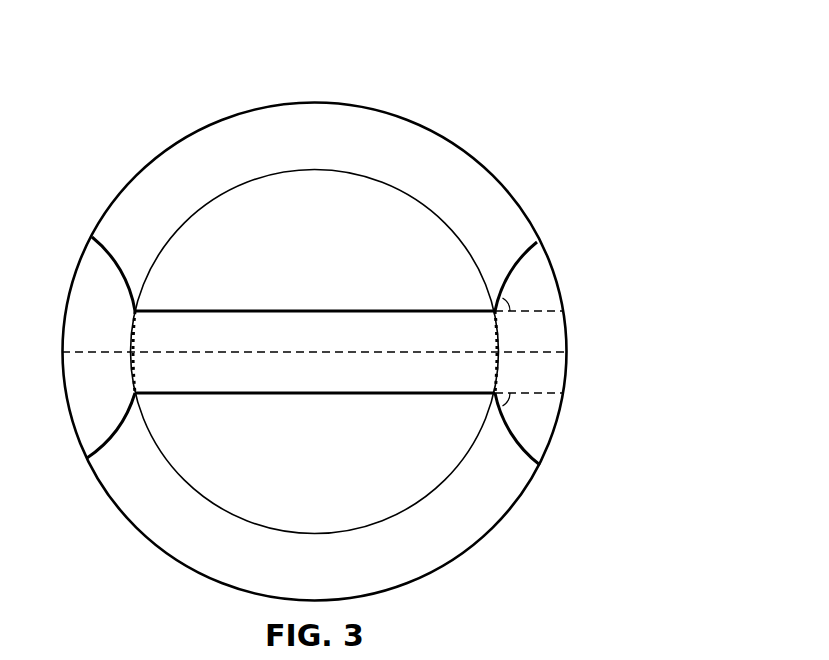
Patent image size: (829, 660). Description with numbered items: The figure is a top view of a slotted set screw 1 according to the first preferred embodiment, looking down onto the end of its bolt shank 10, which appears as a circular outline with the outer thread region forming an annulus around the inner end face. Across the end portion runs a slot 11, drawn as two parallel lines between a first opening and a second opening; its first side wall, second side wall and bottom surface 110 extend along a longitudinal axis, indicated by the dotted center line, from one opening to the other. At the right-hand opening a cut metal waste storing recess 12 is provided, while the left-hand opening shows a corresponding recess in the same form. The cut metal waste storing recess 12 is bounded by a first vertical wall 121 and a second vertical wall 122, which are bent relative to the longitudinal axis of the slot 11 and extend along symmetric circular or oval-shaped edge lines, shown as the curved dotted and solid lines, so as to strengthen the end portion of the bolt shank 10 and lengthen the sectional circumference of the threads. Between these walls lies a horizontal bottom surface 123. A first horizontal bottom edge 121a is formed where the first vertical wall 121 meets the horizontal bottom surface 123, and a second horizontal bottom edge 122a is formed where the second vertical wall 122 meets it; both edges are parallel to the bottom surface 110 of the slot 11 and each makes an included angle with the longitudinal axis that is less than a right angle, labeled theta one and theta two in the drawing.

The slotted set screw 1 is at (505, 143).
The bolt shank 10 is at (405, 144).
The slot 11 is at (330, 310).
The bottom surface 110 is at (235, 328).
The cut metal waste storing recess 12 is at (584, 343).
The first vertical wall 121 is at (523, 458).
The first horizontal bottom edge 121a is at (520, 440).
The second vertical wall 122 is at (513, 252).
The second horizontal bottom edge 122a is at (527, 263).
The horizontal bottom surface 123 is at (555, 337).